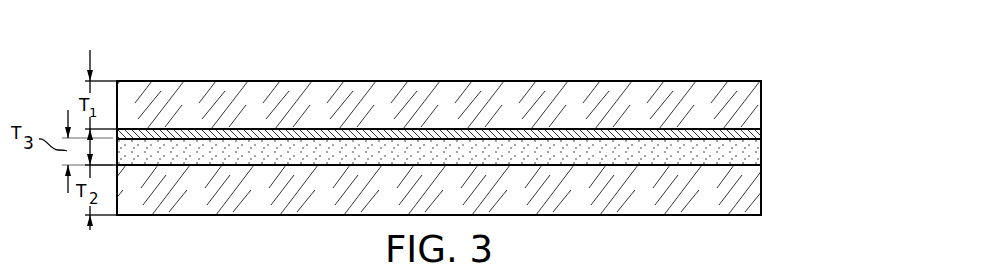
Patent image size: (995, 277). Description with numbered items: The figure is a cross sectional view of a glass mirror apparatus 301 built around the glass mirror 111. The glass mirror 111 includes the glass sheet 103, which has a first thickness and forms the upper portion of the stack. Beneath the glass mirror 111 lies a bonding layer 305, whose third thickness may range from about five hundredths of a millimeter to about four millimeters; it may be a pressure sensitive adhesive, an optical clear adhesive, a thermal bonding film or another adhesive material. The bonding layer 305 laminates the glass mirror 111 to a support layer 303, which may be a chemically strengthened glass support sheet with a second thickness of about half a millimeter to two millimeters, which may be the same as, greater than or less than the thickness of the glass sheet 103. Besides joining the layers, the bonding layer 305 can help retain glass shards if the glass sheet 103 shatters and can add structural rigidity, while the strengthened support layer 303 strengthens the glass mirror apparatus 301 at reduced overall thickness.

The glass sheet 103 is at (439, 69).
The glass mirror apparatus 301 is at (515, 113).
The glass mirror 111 is at (766, 81).
The bonding layer 305 is at (761, 152).
The support layer 303 is at (761, 187).